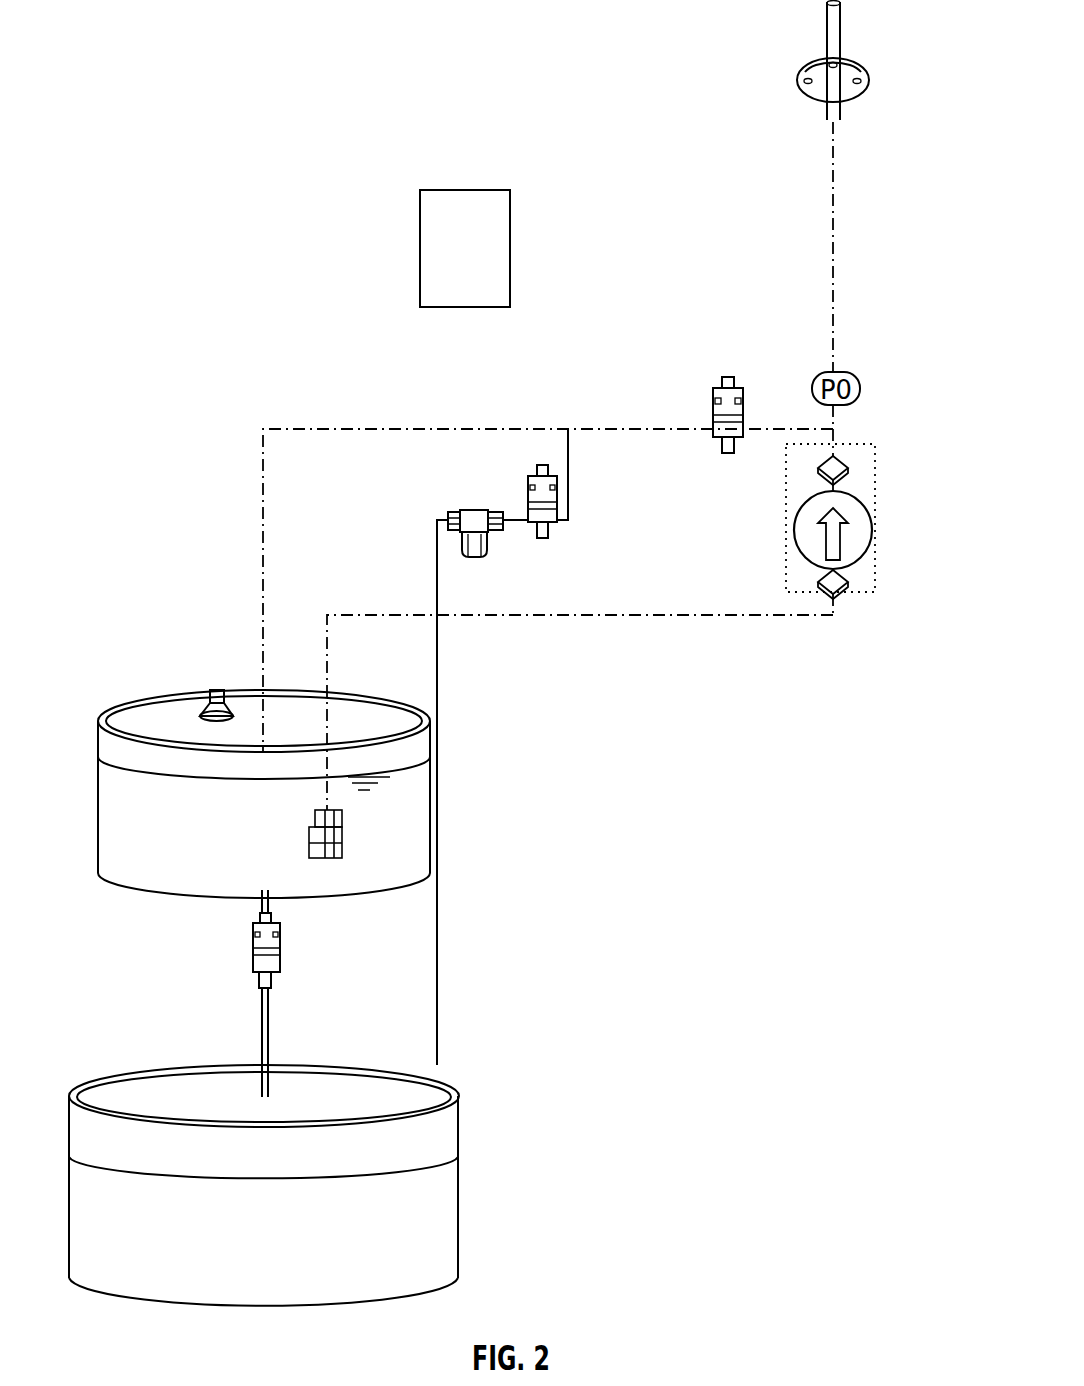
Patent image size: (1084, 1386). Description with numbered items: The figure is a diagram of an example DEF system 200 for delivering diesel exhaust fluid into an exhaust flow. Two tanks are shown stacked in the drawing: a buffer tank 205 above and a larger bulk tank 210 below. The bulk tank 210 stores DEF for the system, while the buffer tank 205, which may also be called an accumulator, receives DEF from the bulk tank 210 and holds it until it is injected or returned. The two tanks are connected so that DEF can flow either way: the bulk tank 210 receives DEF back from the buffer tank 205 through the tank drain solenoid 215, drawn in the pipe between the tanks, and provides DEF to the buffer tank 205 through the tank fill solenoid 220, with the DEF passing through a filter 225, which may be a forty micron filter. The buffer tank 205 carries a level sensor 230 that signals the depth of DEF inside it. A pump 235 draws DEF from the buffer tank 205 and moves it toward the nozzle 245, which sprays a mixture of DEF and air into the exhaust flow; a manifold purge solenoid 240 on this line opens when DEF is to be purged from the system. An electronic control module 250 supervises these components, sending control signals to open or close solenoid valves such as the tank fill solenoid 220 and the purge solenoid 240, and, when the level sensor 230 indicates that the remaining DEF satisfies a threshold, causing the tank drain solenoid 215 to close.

The DEF system 200 is at (183, 72).
The buffer tank 205 is at (284, 882).
The bulk tank 210 is at (285, 1285).
The tank drain solenoid 215 is at (280, 960).
The tank fill solenoid 220 is at (545, 540).
The filter 225 is at (477, 510).
The level sensor 230 is at (216, 690).
The pump 235 is at (892, 540).
The manifold purge solenoid 240 is at (730, 377).
The nozzle 245 is at (840, 32).
The electronic control module 250 is at (465, 248).